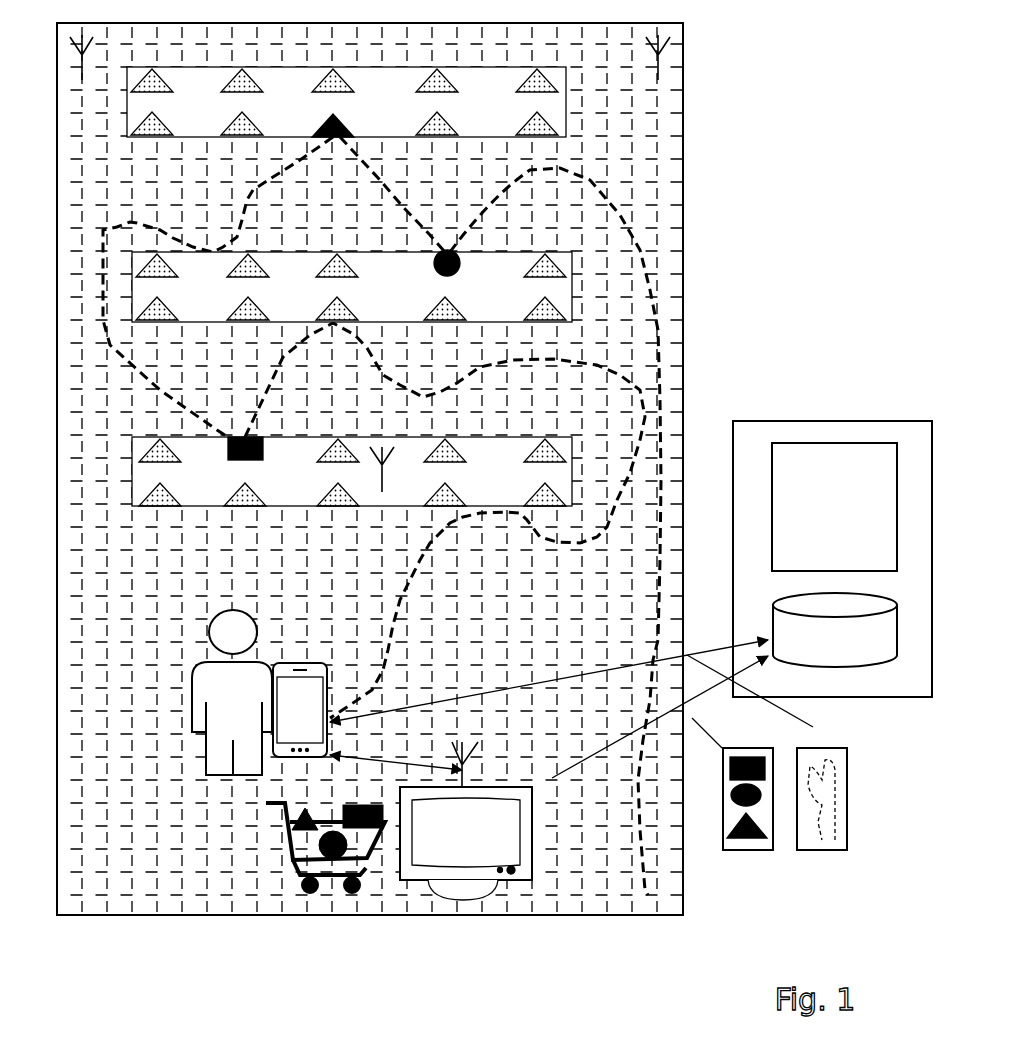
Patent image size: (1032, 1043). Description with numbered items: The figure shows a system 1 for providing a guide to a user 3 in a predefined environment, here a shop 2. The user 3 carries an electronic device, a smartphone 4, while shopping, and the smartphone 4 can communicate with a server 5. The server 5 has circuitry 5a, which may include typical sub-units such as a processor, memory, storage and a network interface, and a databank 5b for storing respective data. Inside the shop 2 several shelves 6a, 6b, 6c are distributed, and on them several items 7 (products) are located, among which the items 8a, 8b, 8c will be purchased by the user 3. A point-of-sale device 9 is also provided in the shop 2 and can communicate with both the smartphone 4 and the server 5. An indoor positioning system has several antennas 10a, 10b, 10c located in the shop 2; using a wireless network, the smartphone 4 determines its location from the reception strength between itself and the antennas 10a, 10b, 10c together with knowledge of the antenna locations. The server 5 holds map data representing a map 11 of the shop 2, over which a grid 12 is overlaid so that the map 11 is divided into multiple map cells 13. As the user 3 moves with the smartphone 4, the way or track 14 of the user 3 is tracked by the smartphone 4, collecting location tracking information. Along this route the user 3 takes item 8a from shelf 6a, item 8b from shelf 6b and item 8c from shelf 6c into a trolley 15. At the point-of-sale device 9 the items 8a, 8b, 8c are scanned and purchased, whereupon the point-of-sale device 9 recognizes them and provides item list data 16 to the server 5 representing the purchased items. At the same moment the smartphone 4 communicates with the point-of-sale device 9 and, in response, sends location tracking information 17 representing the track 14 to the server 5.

The system 1 is at (824, 40).
The shop 2 is at (708, 168).
The user 3 is at (232, 692).
The smartphone 4 is at (300, 710).
The server 5 is at (832, 541).
The circuitry 5a is at (834, 507).
The databank 5b is at (835, 630).
The shelf 6a is at (566, 107).
The shelf 6b is at (572, 278).
The shelf 6c is at (572, 437).
The items 7 is at (232, 120).
The item 8a is at (326, 118).
The item 8b is at (440, 272).
The item 8c is at (243, 460).
The point-of-sale device 9 is at (466, 821).
The antenna 10a is at (85, 52).
The antenna 10b is at (658, 63).
The antenna 10c is at (395, 472).
The map 11 is at (690, 222).
The grid 12 is at (107, 582).
The map cells 13 is at (118, 700).
The track 14 is at (668, 392).
The trolley 15 is at (293, 862).
The item list data 16 is at (738, 850).
The location tracking information 17 is at (825, 850).